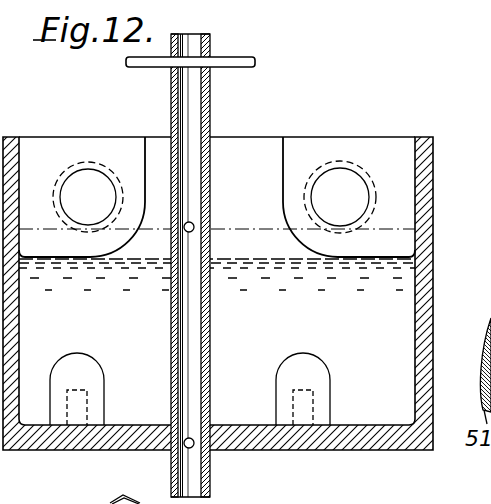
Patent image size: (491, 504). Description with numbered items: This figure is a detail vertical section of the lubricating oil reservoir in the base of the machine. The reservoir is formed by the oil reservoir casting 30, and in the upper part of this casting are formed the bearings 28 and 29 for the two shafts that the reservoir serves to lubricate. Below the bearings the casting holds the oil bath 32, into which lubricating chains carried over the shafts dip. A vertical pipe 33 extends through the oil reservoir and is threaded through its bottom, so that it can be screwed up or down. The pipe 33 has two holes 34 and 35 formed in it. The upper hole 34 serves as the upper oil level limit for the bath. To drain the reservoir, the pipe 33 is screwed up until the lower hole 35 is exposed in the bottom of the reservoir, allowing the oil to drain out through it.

The bearing 28 is at (315, 153).
The bearing 29 is at (98, 148).
The oil reservoir casting 30 is at (432, 270).
The oil bath 32 is at (217, 299).
The vertical pipe 33 is at (200, 193).
The hole 34 is at (194, 225).
The hole 35 is at (195, 447).